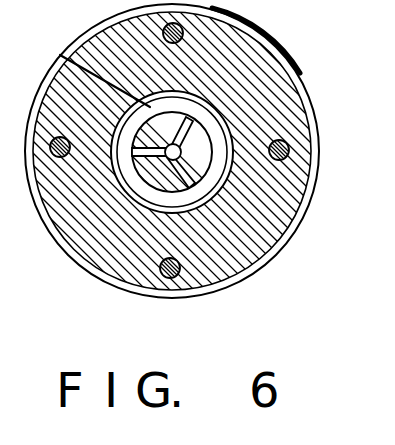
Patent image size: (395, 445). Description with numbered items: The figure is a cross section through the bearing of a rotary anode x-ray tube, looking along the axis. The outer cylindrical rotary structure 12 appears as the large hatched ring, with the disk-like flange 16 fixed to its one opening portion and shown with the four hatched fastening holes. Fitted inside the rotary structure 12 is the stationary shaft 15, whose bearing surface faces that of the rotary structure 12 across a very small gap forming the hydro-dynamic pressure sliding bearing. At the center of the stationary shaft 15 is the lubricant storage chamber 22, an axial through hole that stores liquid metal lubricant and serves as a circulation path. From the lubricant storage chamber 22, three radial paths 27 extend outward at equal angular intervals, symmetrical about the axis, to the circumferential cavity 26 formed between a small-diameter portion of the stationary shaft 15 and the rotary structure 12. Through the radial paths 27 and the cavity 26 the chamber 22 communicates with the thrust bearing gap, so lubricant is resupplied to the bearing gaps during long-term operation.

The cylindrical rotary structure 12 is at (286, 64).
The stationary shaft 15 is at (190, 143).
The disk-like flange 16 is at (263, 228).
The lubricant storage chamber 22 is at (170, 175).
The circumferential cavity 26 is at (200, 196).
The radial paths 27 is at (68, 55).